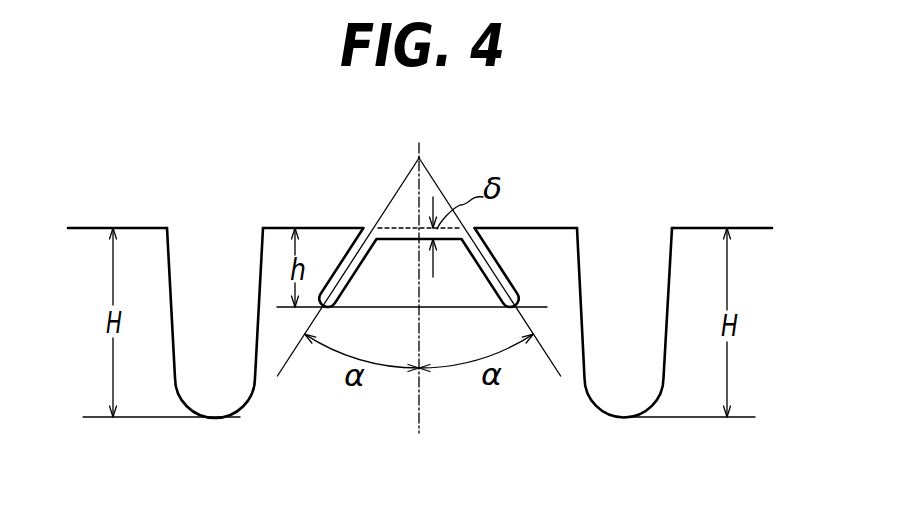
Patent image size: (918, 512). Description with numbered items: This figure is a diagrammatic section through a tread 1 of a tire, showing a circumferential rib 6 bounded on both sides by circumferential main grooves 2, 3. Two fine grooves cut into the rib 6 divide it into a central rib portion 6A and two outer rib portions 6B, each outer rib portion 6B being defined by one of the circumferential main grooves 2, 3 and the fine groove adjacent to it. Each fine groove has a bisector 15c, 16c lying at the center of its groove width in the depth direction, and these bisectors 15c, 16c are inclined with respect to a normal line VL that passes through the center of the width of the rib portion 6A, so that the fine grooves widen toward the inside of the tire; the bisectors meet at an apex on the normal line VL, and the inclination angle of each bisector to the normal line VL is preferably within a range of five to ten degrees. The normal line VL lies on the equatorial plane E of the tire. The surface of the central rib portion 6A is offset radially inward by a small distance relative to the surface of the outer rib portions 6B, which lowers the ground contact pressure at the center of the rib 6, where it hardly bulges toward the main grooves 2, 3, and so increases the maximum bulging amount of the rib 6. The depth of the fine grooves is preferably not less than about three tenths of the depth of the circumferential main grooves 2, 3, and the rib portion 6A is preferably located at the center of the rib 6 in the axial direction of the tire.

The tread 1 is at (710, 228).
The circumferential main groove 2 is at (205, 285).
The circumferential main groove 3 is at (623, 257).
The rib 6 is at (325, 228).
The rib portion 6A is at (410, 229).
The rib portion 6B is at (278, 228).
The bisector 15c is at (291, 358).
The bisector 16c is at (548, 360).
The equatorial plane E is at (419, 158).
The normal line VL is at (419, 403).